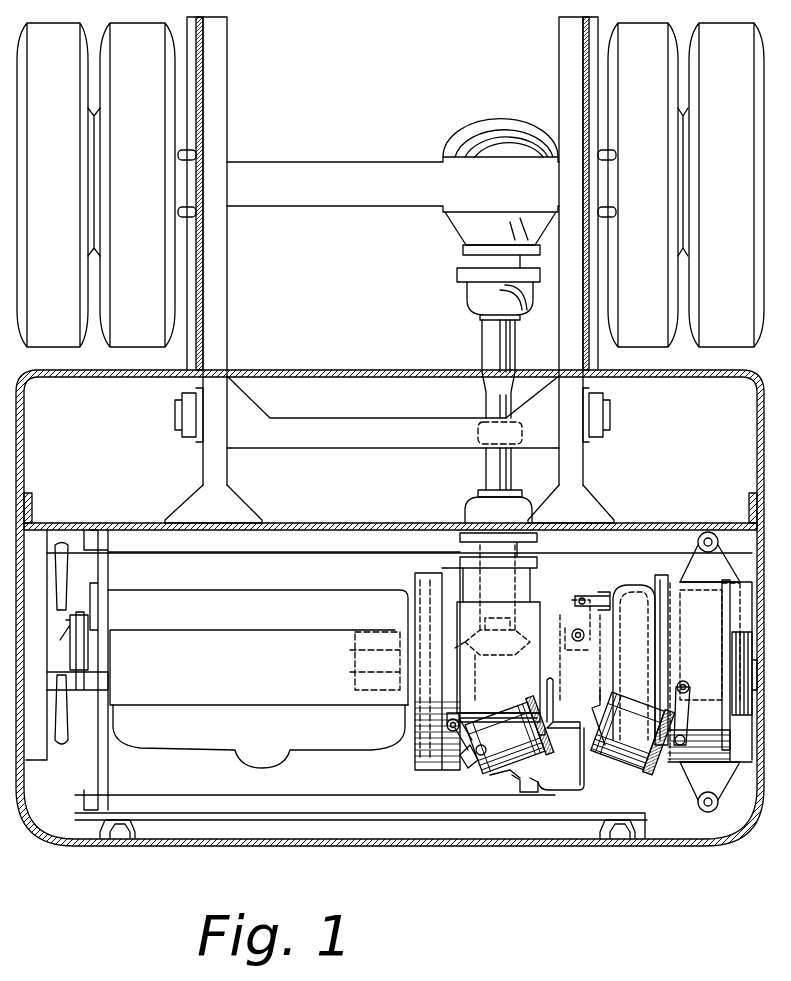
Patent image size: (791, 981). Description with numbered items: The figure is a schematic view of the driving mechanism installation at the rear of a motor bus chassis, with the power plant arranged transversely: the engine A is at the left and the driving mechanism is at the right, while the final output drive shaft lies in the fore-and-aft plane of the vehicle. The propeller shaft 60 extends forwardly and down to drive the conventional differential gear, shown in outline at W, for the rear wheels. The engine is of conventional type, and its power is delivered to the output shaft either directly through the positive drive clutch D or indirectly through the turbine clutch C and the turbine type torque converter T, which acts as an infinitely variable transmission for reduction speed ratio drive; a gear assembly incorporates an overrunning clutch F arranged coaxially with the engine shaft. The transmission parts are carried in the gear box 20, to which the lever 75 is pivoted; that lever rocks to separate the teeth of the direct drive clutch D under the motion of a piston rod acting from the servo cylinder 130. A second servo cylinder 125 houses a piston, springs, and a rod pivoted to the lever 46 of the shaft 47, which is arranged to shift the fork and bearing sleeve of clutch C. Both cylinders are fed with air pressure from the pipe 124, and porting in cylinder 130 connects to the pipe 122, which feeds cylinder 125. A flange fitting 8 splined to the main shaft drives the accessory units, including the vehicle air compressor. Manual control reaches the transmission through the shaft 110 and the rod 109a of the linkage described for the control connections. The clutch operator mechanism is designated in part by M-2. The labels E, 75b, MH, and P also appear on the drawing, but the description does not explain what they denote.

The differential gear W is at (496, 136).
The propeller shaft 60 is at (512, 585).
The overrunning clutch F is at (592, 655).
The rod 109a is at (600, 596).
The turbine type torque converter T is at (640, 600).
The turbine clutch C is at (700, 602).
The shaft 110 is at (578, 628).
The gear box 20 is at (603, 640).
The shaft 47 is at (683, 682).
The flange fitting 8 is at (742, 632).
The pipe 124 is at (540, 712).
The pipe 122 is at (563, 740).
The servo cylinder 125 is at (628, 716).
The lever 46 is at (688, 740).
The lever 75 is at (509, 737).
The engine bed E is at (725, 740).
The positive drive clutch D is at (415, 752).
The engine A is at (178, 745).
The pump mount 75b is at (460, 770).
The motor housing MH is at (500, 776).
The servo cylinder 130 is at (512, 778).
The pipe P is at (562, 728).
The clutch operator mechanism M-2 is at (620, 762).